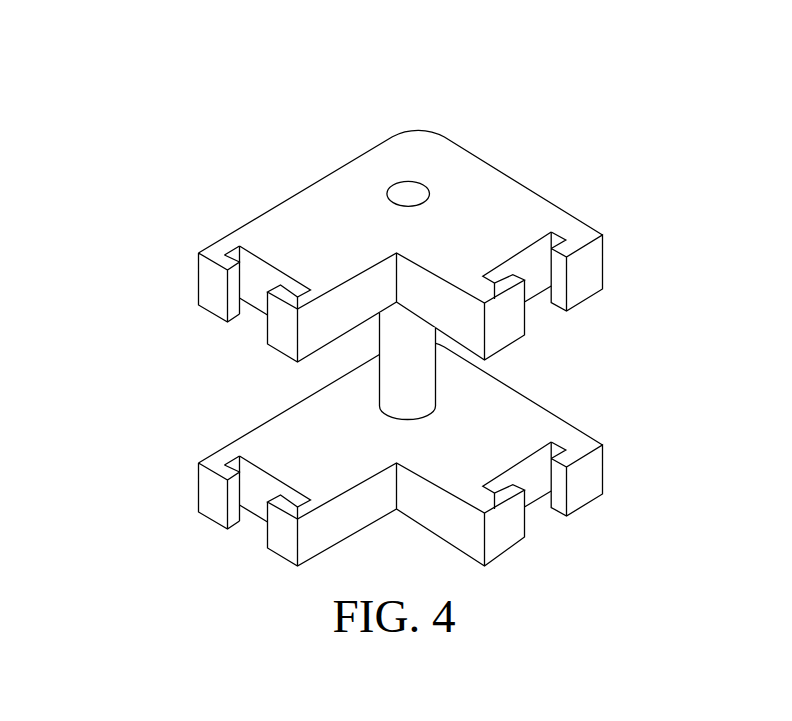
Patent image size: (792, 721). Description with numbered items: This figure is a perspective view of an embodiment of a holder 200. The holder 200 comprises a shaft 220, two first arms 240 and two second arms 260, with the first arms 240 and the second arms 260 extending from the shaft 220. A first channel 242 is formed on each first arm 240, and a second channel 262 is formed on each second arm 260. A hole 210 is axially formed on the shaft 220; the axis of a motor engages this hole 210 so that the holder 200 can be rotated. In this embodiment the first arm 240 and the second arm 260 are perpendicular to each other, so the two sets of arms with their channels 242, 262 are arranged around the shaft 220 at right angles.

The holder 200 is at (402, 296).
The hole 210 is at (410, 190).
The shaft 220 is at (418, 365).
The first arm 240 is at (514, 202).
The first channel 242 is at (537, 267).
The second arm 260 is at (290, 220).
The second channel 262 is at (253, 282).